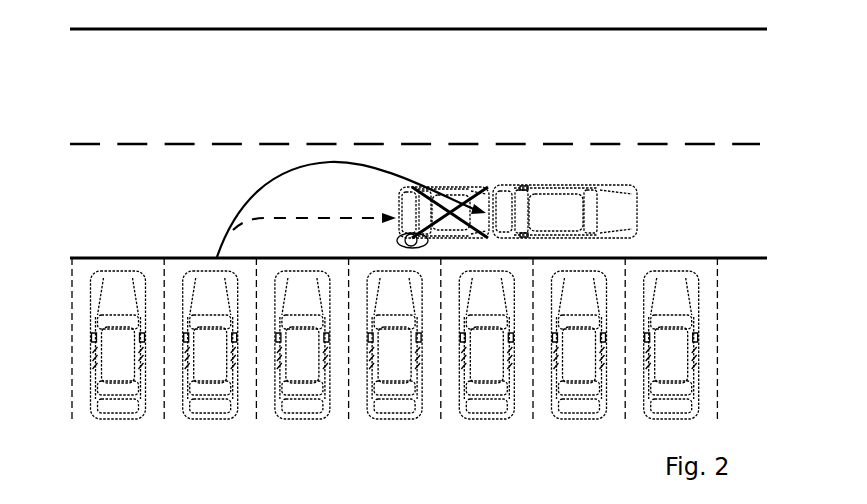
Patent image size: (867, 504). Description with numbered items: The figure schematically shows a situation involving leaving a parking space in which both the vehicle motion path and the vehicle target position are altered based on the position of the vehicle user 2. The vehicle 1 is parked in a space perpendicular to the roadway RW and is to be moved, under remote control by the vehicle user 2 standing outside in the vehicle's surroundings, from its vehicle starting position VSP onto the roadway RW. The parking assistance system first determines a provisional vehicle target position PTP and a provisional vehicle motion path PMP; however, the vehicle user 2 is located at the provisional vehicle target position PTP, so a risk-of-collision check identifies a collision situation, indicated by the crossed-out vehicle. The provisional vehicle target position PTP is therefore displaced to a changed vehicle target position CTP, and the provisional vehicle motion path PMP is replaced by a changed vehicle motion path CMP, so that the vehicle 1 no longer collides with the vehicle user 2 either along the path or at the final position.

The roadway RW is at (128, 182).
The provisional vehicle motion path PMP is at (258, 217).
The changed vehicle motion path CMP is at (330, 160).
The provisional vehicle target position PTP is at (467, 176).
The changed vehicle target position CTP is at (580, 168).
The vehicle 1 is at (612, 185).
The vehicle user 2 is at (397, 238).
The vehicle starting position VSP is at (198, 425).